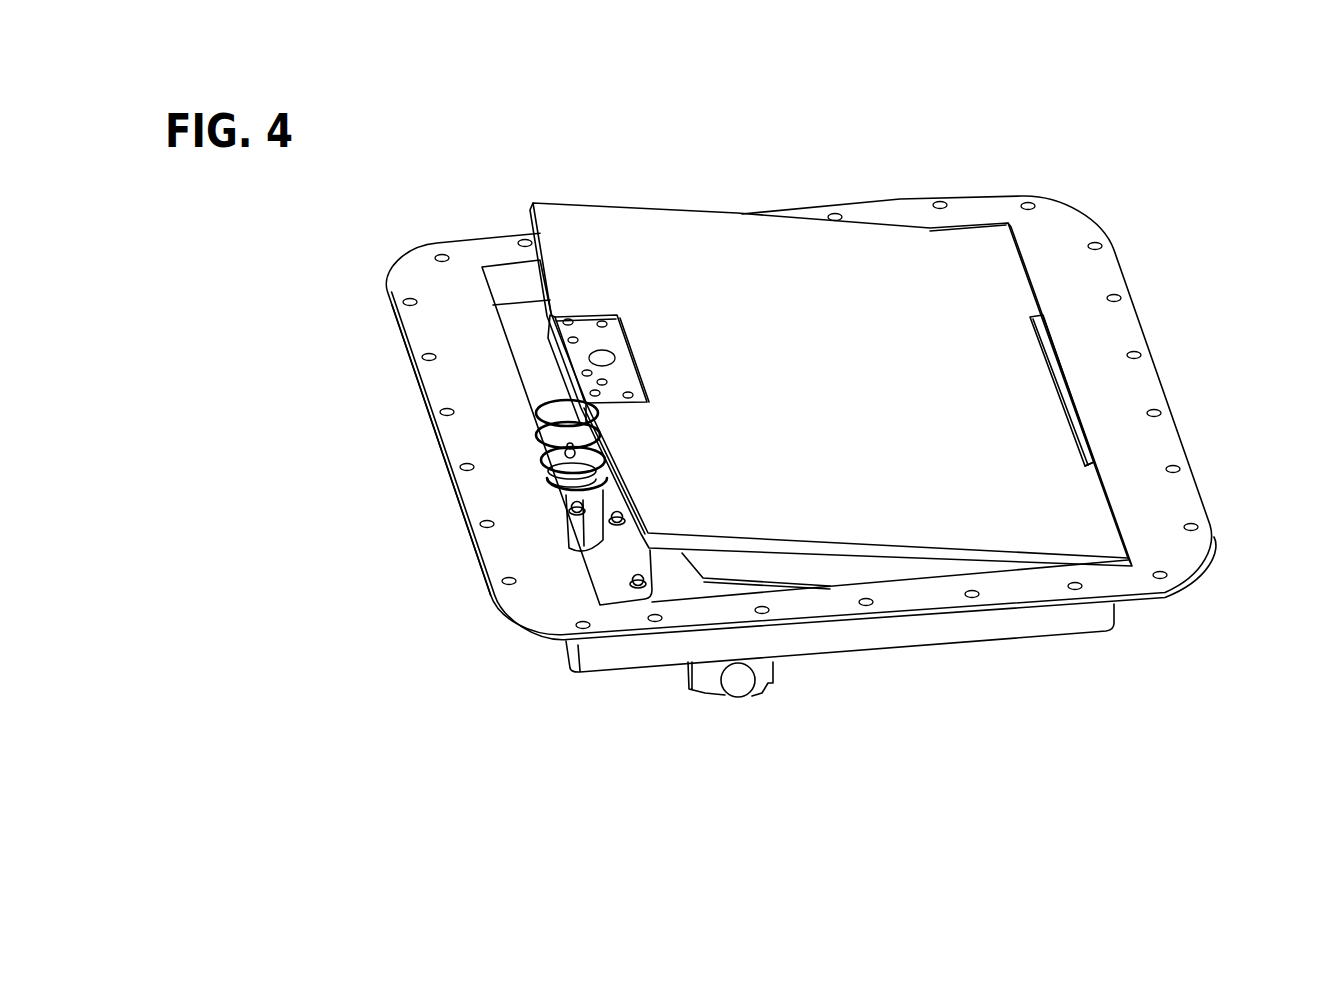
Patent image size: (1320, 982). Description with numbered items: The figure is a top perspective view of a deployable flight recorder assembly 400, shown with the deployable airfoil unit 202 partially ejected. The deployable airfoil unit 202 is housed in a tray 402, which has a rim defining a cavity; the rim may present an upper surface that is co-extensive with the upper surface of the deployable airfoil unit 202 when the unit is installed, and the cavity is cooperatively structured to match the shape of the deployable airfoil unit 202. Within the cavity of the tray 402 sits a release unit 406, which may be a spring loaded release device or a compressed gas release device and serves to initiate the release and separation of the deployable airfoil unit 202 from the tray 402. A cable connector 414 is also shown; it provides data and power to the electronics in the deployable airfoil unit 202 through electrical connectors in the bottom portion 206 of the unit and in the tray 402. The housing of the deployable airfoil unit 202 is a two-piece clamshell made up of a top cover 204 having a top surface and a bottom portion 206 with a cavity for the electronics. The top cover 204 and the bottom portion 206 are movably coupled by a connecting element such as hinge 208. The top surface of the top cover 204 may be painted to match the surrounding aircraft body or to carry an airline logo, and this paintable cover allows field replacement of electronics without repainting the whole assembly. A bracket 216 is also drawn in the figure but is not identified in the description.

The deployable flight recorder assembly 400 is at (470, 118).
The deployable airfoil unit 202 is at (840, 266).
The top cover 204 is at (1011, 404).
The bottom portion 206 is at (805, 580).
The hinge 208 is at (1088, 447).
The hinge bracket 216 is at (600, 316).
The tray 402 is at (437, 320).
The release unit 406 is at (565, 462).
The cable connector 414 is at (714, 700).